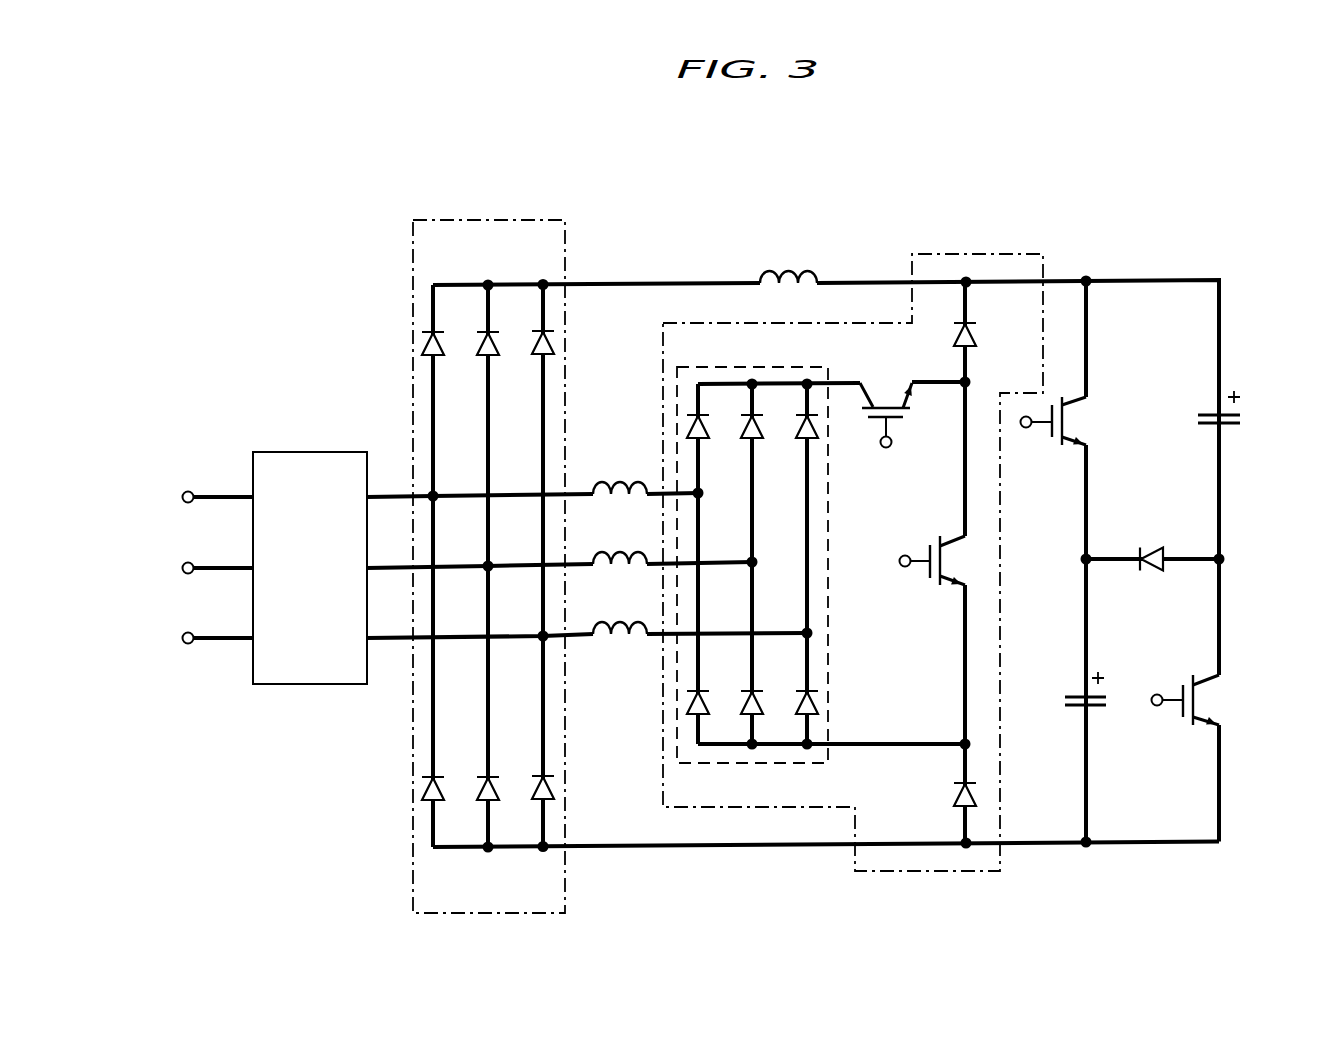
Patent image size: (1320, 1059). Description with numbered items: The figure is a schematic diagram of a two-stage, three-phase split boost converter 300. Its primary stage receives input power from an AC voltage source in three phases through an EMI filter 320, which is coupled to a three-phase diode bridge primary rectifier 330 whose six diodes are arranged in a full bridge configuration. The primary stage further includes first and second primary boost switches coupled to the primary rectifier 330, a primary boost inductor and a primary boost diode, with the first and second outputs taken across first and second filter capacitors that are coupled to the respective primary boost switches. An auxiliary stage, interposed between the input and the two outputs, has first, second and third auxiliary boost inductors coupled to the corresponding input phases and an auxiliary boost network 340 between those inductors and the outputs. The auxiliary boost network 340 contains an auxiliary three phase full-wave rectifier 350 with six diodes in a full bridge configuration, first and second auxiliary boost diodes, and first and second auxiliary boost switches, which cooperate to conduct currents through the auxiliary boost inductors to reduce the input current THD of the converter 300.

The two-stage, three-phase split boost (TSTPSB) converter 300 is at (1194, 126).
The EMI filter 320 is at (312, 452).
The three-phase diode bridge primary rectifier 330 is at (488, 220).
The auxiliary boost network 340 is at (976, 254).
The auxiliary three phase full-wave rectifier 350 is at (729, 365).